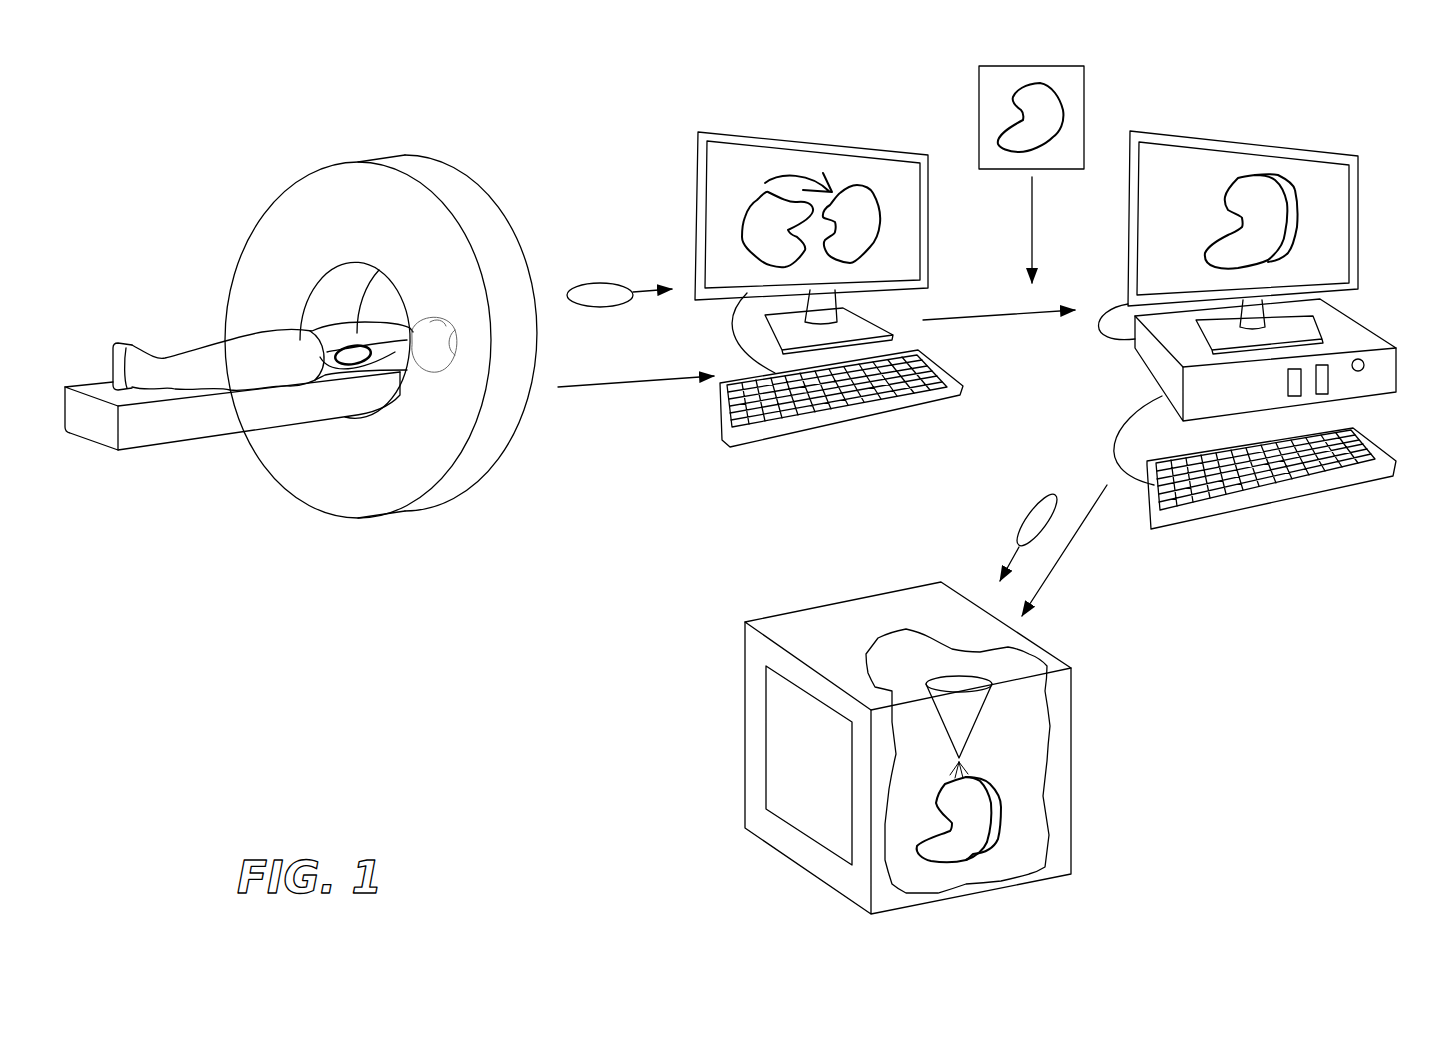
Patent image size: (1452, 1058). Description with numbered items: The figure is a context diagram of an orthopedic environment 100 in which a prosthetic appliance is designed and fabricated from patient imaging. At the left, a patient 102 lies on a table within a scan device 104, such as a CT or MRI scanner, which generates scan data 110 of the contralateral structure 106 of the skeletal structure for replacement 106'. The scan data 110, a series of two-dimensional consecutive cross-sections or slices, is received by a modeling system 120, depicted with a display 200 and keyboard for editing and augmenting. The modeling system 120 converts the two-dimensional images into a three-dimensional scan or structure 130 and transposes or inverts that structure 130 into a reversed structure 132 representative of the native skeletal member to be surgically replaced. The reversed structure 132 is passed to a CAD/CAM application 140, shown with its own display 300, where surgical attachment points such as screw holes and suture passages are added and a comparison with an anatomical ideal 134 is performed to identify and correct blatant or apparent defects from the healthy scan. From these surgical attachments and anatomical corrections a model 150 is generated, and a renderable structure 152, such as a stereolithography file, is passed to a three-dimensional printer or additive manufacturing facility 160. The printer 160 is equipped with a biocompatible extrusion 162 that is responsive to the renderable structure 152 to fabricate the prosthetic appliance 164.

The orthopedic environment 100 is at (385, 657).
The patient 102 is at (158, 348).
The scan device 104 is at (313, 158).
The contralateral structure 106 is at (262, 287).
The skeletal structure for replacement 106' is at (266, 252).
The scan data 110 is at (610, 303).
The modeling system 120 is at (943, 356).
The 3D scan or structure 130 is at (767, 213).
The reversed structure 132 is at (863, 200).
The anatomical ideal 134 is at (1086, 78).
The CAD/CAM application 140 is at (1349, 318).
The model 150 is at (1299, 215).
The renderable structure 152 is at (1024, 526).
The 3D printer/additive manufacturing facility 160 is at (845, 605).
The biocompatible extrusion 162 is at (978, 708).
The prosthetic appliance 164 is at (997, 810).
The editing computer display 200 is at (722, 190).
The CAD/CAM display 300 is at (1356, 154).